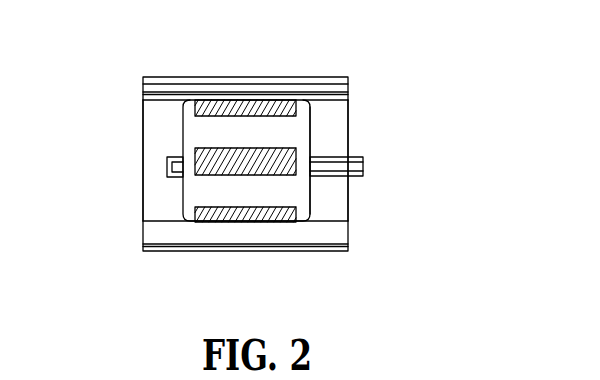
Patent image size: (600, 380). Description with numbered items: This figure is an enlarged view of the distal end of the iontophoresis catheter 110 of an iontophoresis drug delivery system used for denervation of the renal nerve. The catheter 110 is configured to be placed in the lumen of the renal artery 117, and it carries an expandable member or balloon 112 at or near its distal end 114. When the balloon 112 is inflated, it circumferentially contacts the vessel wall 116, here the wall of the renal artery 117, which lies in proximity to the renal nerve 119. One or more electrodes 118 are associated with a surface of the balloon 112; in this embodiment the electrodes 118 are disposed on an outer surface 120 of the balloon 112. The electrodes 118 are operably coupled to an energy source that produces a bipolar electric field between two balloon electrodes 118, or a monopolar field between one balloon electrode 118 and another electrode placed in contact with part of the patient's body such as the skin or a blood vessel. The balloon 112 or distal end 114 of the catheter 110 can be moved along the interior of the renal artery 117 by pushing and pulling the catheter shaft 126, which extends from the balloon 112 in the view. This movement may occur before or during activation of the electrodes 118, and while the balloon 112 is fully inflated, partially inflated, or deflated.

The iontophoresis catheter 110 is at (397, 180).
The balloon 112 is at (188, 107).
The distal end 114 is at (136, 180).
The vessel wall 116 is at (335, 101).
The renal artery 117 is at (158, 261).
The electrodes 118 is at (248, 107).
The renal nerve 119 is at (142, 88).
The outer surface 120 is at (302, 107).
The catheter shaft 126 is at (355, 157).